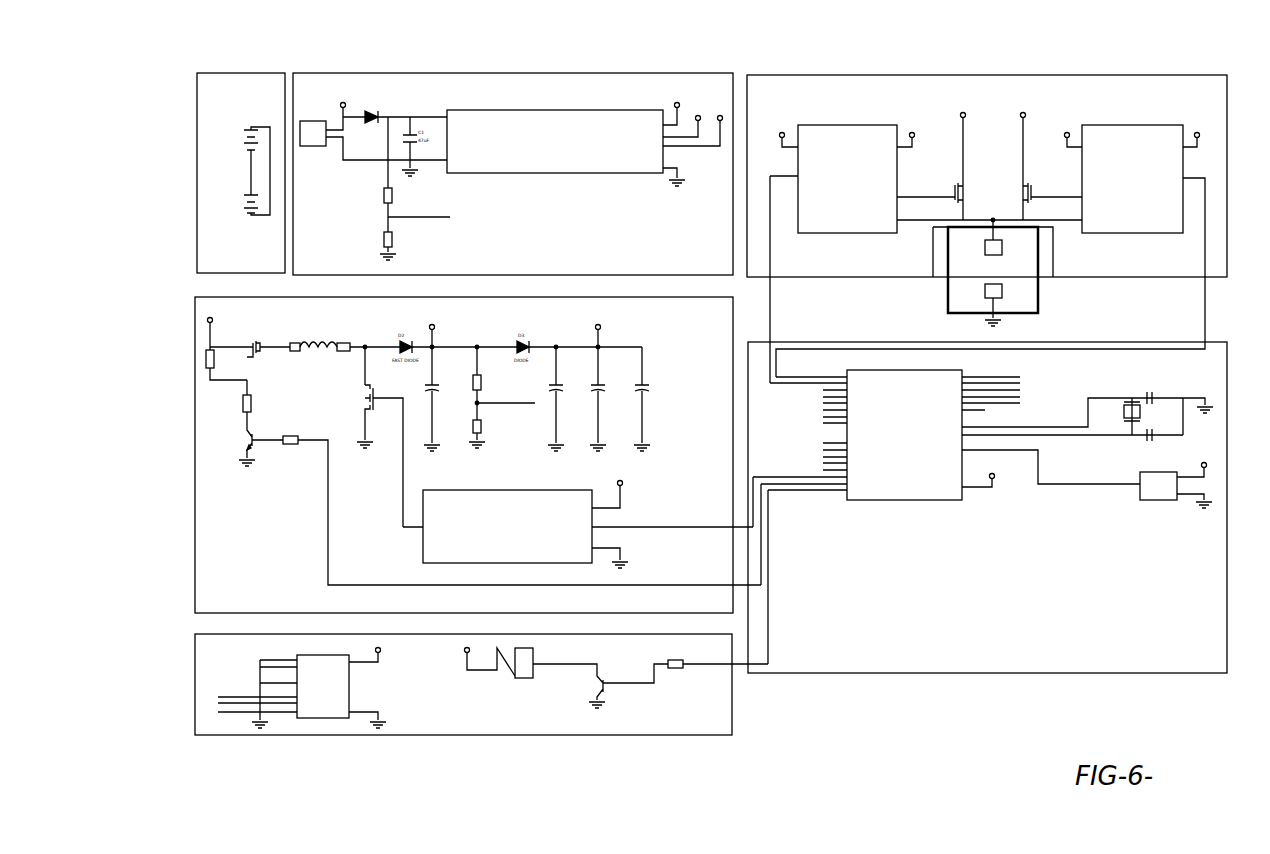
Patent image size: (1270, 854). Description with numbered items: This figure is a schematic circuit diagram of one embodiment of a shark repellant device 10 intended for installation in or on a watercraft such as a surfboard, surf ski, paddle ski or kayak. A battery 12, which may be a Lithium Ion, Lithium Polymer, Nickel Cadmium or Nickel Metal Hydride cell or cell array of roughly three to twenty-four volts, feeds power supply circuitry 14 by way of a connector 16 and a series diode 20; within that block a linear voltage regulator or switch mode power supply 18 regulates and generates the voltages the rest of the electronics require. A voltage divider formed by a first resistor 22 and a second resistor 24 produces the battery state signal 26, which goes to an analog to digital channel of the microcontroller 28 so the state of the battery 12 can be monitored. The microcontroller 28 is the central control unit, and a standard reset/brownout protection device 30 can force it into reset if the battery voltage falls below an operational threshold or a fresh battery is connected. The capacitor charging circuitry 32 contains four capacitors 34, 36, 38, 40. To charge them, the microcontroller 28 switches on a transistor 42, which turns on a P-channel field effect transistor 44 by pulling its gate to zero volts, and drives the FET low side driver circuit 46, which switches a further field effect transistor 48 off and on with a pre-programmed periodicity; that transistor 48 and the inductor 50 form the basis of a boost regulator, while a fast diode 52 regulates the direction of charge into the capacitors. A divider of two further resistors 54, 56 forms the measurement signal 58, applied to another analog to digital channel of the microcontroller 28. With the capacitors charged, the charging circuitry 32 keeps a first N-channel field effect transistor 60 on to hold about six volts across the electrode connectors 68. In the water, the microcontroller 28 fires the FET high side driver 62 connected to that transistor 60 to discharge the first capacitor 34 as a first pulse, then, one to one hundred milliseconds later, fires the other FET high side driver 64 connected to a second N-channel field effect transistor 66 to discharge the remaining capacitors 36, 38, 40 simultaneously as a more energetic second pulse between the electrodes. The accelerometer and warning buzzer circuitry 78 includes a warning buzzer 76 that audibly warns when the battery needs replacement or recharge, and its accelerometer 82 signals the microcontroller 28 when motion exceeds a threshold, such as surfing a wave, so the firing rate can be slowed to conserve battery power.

The shark repellant device 10 is at (903, 50).
The battery 12 is at (232, 72).
The power supply circuitry 14 is at (503, 72).
The connector 16 is at (307, 124).
The switch mode power supply 18 is at (615, 110).
The diode D1 20 is at (373, 103).
The resistor R1 22 is at (384, 197).
The resistor R2 24 is at (384, 238).
The battery state signal MEAS2 26 is at (462, 228).
The microcontroller 28 is at (932, 497).
The reset/brownout protection device 30 is at (1135, 493).
The capacitor charging circuitry 32 is at (195, 316).
The capacitor C2 34 is at (452, 315).
The capacitor C3 36 is at (558, 385).
The capacitor C4 38 is at (600, 385).
The capacitor C5 40 is at (645, 385).
The transistor Q1 42 is at (266, 455).
The field effect transistor FET-3 44 is at (254, 318).
The FET low side driver circuit 46 is at (477, 503).
The FET-4 48 is at (360, 395).
The inductor L1 50 is at (335, 320).
The fast diode D2 52 is at (428, 385).
The resistor R4 54 is at (476, 378).
The resistor R6 56 is at (471, 432).
The signal MEAS1 58 is at (540, 436).
The N-channel FET-1 60 is at (966, 168).
The FET high side driver 62 is at (826, 140).
The FET high side driver 64 is at (1123, 140).
The N-channel FET-2 66 is at (1028, 168).
The electrode connectors 68 is at (985, 250).
The buzzer 76 is at (523, 670).
The accelerometer and warning buzzer circuitry 78 is at (372, 736).
The accelerometer 82 is at (320, 732).